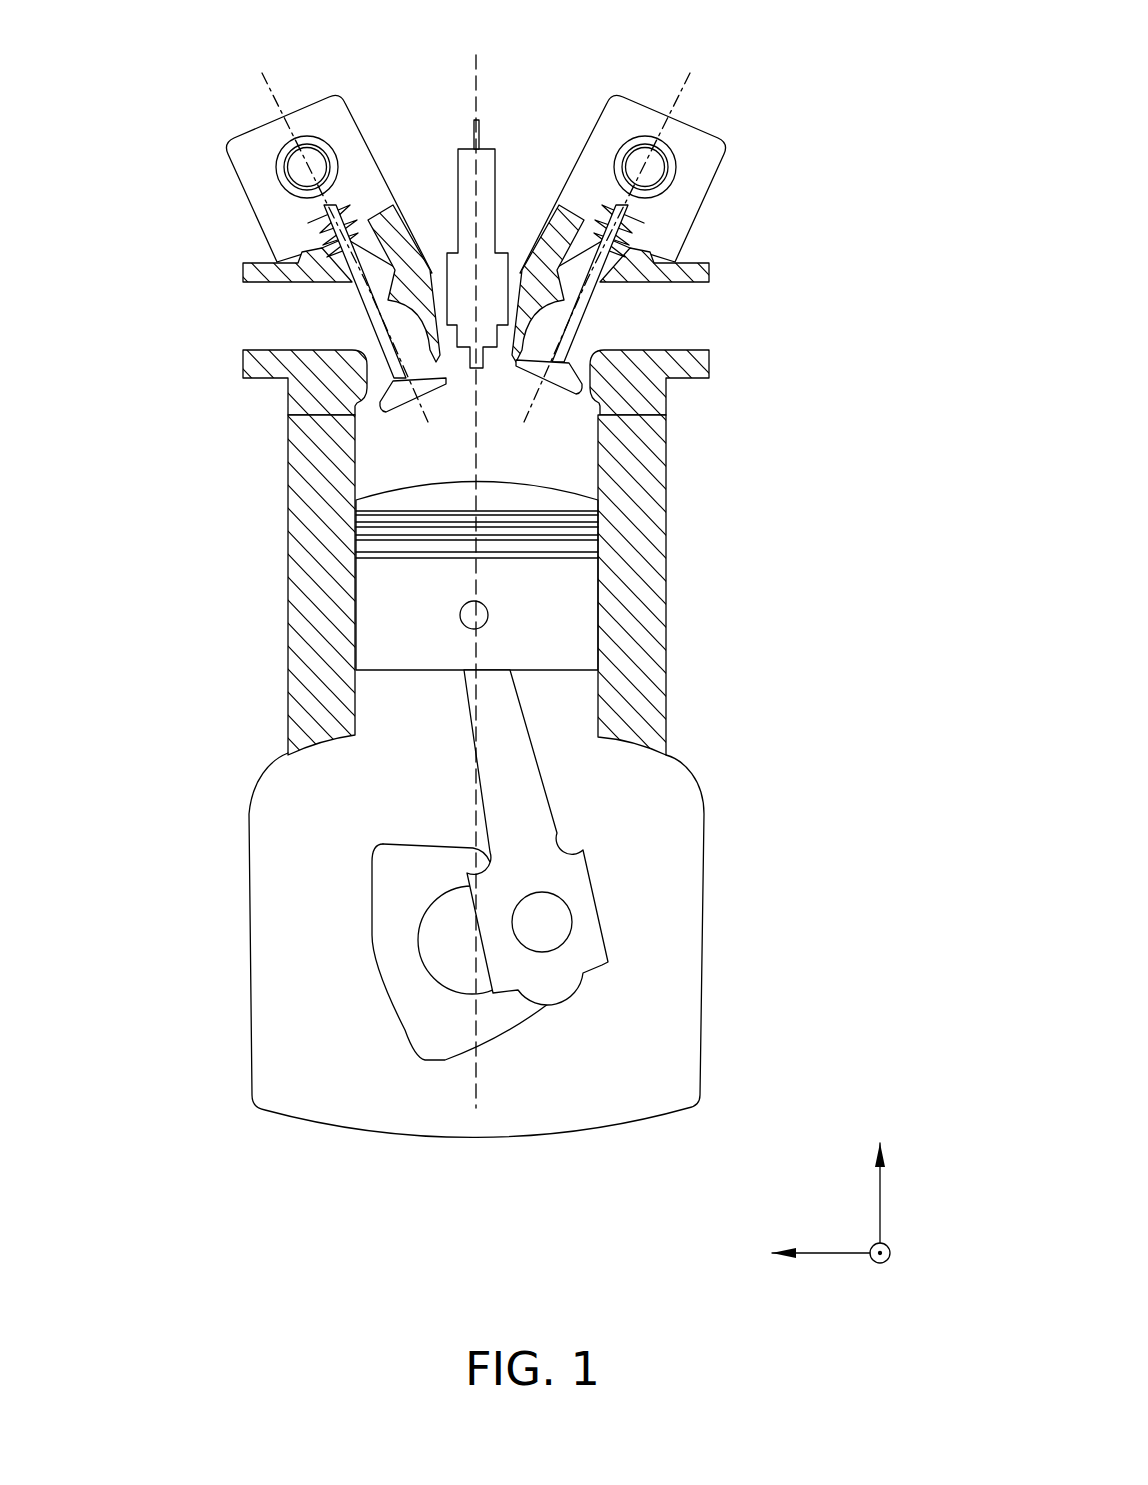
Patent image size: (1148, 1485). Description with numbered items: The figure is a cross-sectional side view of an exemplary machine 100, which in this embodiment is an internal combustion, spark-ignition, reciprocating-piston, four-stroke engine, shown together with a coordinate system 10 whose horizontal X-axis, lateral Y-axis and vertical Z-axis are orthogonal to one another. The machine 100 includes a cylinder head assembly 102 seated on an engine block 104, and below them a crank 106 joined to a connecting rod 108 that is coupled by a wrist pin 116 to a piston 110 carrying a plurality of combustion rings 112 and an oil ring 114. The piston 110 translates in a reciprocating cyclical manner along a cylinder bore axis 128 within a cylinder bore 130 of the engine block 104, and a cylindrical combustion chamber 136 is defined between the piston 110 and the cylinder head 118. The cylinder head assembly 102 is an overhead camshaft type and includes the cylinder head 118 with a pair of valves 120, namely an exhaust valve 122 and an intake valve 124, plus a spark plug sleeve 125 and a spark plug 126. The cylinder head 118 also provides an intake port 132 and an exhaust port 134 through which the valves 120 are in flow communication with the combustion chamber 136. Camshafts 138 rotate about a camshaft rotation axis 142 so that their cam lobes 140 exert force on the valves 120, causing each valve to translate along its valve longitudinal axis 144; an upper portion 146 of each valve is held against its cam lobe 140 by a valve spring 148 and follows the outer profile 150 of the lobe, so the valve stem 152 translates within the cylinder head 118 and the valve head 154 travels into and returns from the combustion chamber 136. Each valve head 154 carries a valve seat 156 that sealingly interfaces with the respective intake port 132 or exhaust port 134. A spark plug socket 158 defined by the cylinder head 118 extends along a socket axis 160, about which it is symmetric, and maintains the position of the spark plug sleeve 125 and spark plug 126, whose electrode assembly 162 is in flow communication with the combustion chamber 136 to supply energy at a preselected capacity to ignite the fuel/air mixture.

The coordinate system 10 is at (838, 1220).
The machine 100 is at (737, 85).
The cylinder head assembly 102 is at (805, 130).
The engine block 104 is at (295, 633).
The crank 106 is at (380, 890).
The connecting rod 108 is at (525, 791).
The piston 110 is at (580, 632).
The combustion rings 112 is at (594, 537).
The oil ring 114 is at (592, 557).
The wrist pin 116 is at (487, 613).
The cylinder head 118 is at (690, 367).
The valves 120 is at (475, 348).
The exhaust valve 122 is at (358, 292).
The intake valve 124 is at (688, 280).
The spark plug sleeve 125 is at (534, 379).
The spark plug 126 is at (487, 182).
The cylinder bore axis 128 is at (477, 1072).
The cylinder bore 130 is at (357, 704).
The intake port 132 is at (640, 310).
The exhaust port 134 is at (252, 310).
The combustion chamber 136 is at (400, 467).
The camshafts 138 is at (273, 168).
The cam lobes 140 is at (292, 227).
The camshaft rotation axis 142 is at (277, 147).
The valve longitudinal axis 144 is at (262, 76).
The upper portion 146 is at (310, 240).
The valve spring 148 is at (290, 248).
The outer profile 150 is at (338, 91).
The valve stem 152 is at (372, 331).
The valve head 154 is at (375, 400).
The valve seat 156 is at (367, 387).
The spark plug socket 158 is at (428, 228).
The socket axis 160 is at (470, 66).
The electrode assembly 162 is at (427, 398).